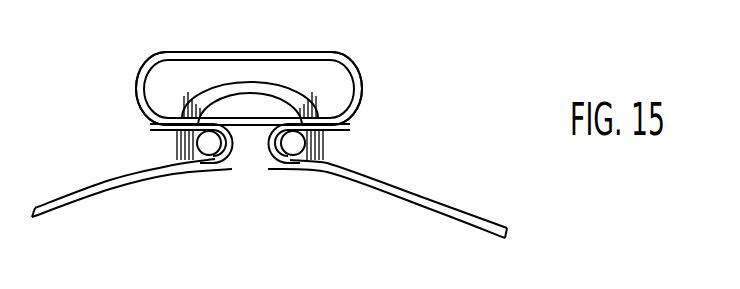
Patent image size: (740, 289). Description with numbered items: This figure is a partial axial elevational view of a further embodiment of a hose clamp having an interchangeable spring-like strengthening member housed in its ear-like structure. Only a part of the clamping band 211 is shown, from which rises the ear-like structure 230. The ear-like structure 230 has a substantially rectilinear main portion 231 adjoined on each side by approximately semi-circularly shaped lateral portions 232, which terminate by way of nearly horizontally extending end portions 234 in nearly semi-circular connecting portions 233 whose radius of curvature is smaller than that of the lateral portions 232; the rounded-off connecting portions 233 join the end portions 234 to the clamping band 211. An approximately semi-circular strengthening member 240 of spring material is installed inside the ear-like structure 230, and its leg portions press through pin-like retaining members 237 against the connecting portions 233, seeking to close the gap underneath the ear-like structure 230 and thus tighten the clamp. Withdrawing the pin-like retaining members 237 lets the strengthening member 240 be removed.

The clamping band 211 is at (68, 197).
The ear-like structure 230 is at (272, 54).
The main portion 231 is at (240, 55).
The lateral portions 232 is at (137, 93).
The connecting portions 233 is at (268, 148).
The end portions 234 is at (305, 110).
The pin-like retaining members 237 is at (209, 152).
The strengthening member 240 is at (170, 146).